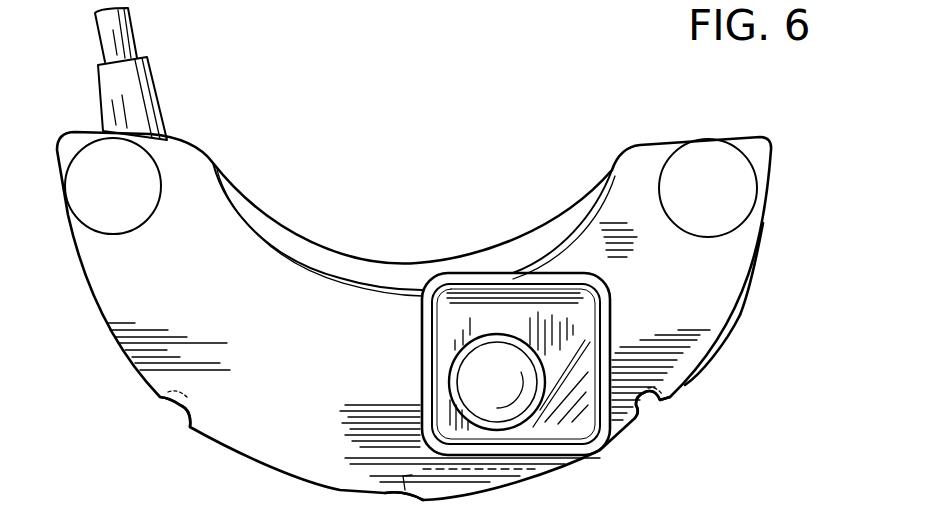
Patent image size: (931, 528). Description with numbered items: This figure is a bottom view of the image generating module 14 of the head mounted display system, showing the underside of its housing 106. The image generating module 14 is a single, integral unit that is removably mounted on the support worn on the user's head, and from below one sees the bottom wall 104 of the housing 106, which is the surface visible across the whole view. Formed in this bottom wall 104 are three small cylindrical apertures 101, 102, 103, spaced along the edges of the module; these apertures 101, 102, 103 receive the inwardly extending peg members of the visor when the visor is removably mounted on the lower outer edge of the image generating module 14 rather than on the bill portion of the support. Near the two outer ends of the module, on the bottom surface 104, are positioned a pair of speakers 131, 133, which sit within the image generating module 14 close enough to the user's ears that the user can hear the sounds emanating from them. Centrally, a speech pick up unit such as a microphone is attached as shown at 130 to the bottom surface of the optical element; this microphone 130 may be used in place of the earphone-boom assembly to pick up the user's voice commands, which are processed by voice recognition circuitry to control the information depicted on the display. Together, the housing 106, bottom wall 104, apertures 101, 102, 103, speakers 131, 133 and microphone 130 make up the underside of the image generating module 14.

The image generating module 14 is at (638, 167).
The cylindrical aperture 101 is at (160, 398).
The cylindrical aperture 102 is at (547, 472).
The cylindrical aperture 103 is at (672, 402).
The bottom wall 104 is at (720, 302).
The housing 106 is at (755, 270).
The speech pick up unit 130 is at (472, 378).
The speaker 131 is at (147, 178).
The speaker 133 is at (722, 162).